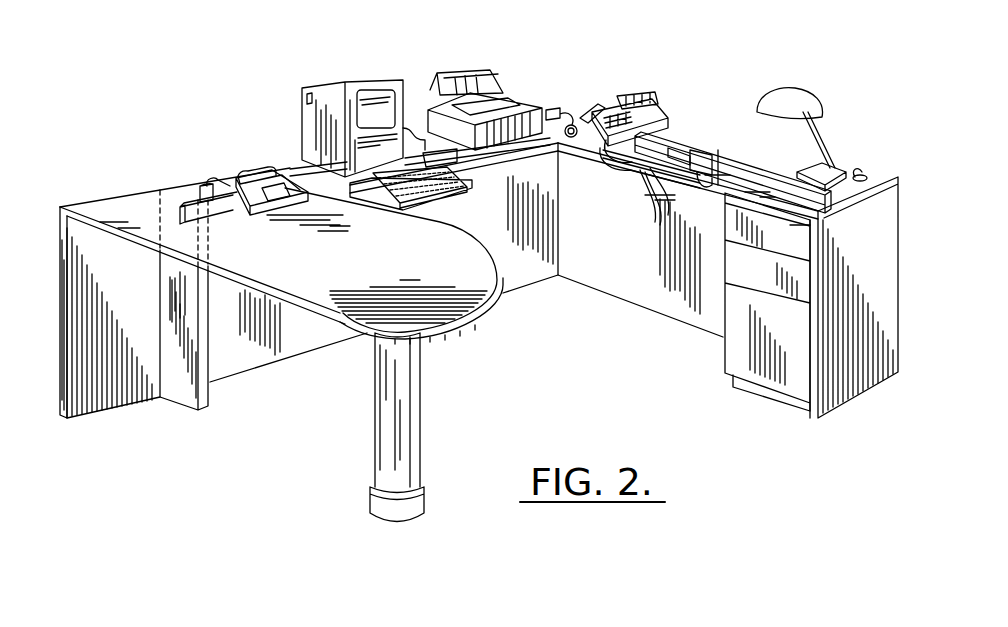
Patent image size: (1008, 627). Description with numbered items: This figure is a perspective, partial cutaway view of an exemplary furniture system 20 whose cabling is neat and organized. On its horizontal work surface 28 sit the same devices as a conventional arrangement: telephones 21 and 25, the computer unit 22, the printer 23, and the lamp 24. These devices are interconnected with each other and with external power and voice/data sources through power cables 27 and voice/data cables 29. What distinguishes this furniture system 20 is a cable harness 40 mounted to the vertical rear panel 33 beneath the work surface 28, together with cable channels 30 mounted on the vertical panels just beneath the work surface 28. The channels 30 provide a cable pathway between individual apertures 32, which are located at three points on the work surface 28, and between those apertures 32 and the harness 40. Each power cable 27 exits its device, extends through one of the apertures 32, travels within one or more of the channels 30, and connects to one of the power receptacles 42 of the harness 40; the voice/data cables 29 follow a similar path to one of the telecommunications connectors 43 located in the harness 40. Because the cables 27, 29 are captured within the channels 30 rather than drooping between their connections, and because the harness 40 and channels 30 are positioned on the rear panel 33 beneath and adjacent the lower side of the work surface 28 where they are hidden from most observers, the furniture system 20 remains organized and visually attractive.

The furniture system 20 is at (163, 163).
The telephone 21 is at (267, 130).
The computer unit 22 is at (333, 92).
The printer 23 is at (468, 77).
The lamp 24 is at (854, 72).
The telephone 25 is at (603, 107).
The power cables 27 is at (655, 190).
The horizontal work surface 28 is at (768, 158).
The voice/data cables 29 is at (678, 152).
The cable channels 30 is at (166, 190).
The apertures 32 is at (214, 147).
The vertical rear panel 33 is at (720, 238).
The cable harness 40 is at (626, 163).
The power receptacles 42 is at (688, 156).
The telecommunications connectors 43 is at (685, 153).